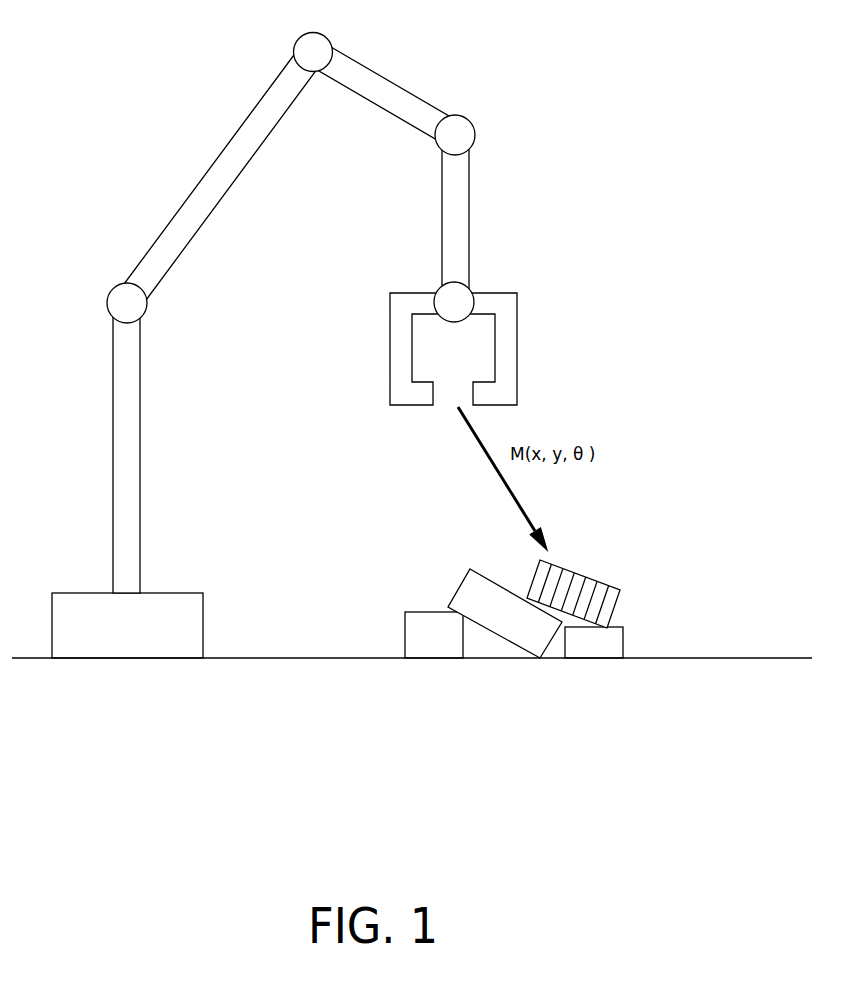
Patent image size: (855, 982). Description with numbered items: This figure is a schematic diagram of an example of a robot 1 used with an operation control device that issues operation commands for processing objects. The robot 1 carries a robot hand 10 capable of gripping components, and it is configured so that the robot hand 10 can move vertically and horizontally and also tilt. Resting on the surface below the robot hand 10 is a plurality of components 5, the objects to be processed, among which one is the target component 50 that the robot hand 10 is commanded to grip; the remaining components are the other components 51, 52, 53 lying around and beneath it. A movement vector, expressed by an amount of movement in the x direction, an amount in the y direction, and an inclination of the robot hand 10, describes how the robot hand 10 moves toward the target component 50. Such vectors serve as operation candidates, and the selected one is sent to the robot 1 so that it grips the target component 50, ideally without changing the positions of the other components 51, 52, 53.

The robot 1 is at (284, 336).
The robot hand 10 is at (362, 342).
The components 5 is at (526, 590).
The target component 50 is at (585, 590).
The other component 51 is at (482, 599).
The other component 52 is at (418, 629).
The other component 53 is at (610, 645).